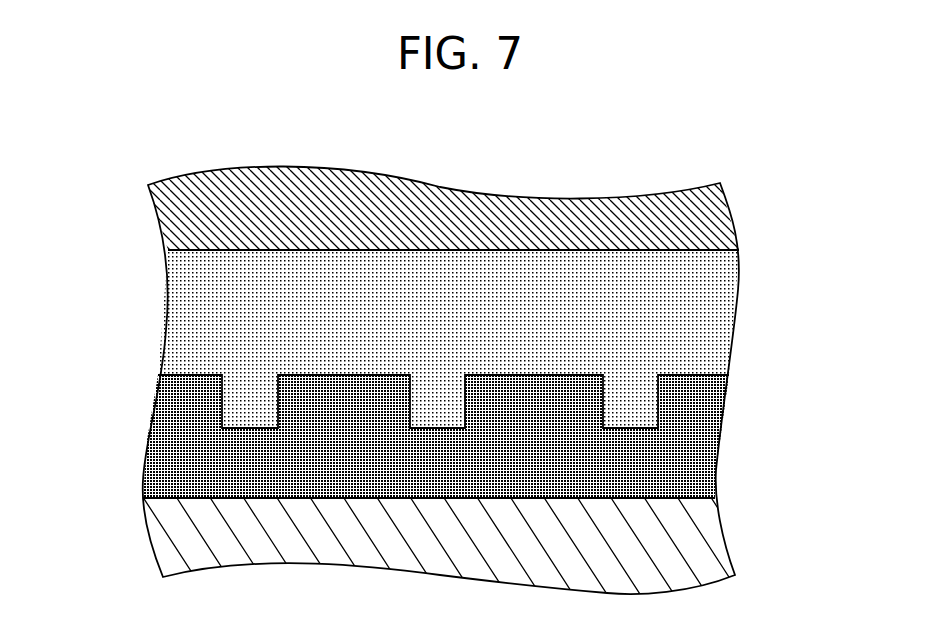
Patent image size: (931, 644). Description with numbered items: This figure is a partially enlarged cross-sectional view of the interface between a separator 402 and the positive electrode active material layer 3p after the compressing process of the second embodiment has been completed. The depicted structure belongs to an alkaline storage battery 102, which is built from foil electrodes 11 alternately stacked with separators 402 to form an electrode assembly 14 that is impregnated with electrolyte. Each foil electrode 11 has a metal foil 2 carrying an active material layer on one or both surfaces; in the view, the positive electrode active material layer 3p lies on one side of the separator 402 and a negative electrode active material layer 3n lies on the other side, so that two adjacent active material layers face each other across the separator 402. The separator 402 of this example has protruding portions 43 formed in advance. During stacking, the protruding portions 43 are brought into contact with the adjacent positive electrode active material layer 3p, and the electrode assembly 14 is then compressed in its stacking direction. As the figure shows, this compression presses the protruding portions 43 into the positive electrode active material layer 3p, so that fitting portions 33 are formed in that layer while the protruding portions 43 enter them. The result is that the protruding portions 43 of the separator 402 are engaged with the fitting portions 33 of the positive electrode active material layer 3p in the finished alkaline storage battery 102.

The alkaline storage battery 102 is at (632, 180).
The metal foil 2 is at (690, 555).
The negative electrode active material layer 3n is at (337, 197).
The positive electrode active material layer 3p is at (677, 468).
The foil electrode 11 is at (428, 203).
The electrode assembly 14 is at (693, 228).
The separator 402 is at (685, 273).
The protruding portion 43 is at (250, 388).
The fitting portion 33 is at (250, 427).